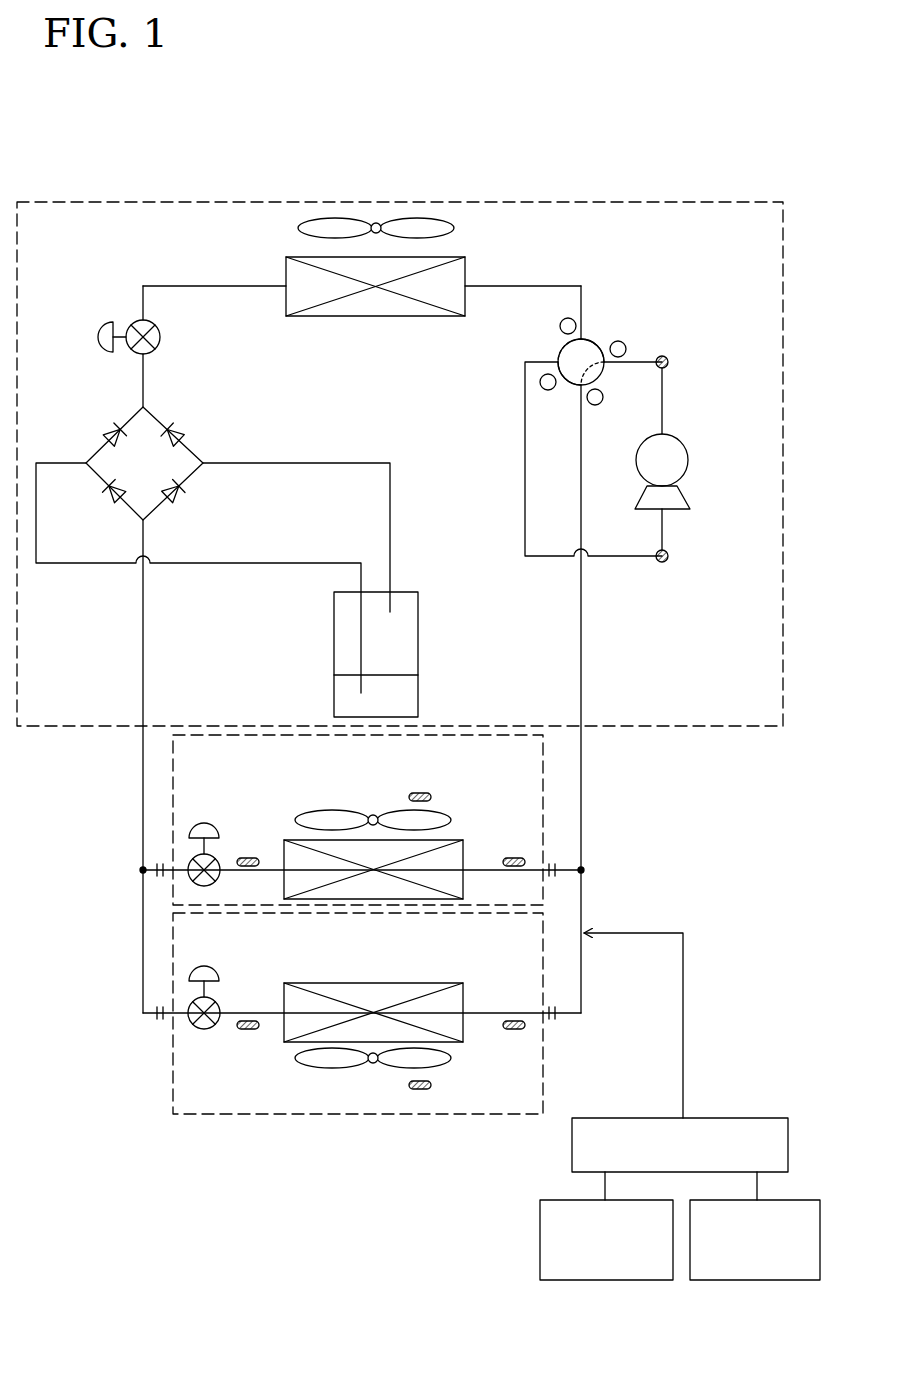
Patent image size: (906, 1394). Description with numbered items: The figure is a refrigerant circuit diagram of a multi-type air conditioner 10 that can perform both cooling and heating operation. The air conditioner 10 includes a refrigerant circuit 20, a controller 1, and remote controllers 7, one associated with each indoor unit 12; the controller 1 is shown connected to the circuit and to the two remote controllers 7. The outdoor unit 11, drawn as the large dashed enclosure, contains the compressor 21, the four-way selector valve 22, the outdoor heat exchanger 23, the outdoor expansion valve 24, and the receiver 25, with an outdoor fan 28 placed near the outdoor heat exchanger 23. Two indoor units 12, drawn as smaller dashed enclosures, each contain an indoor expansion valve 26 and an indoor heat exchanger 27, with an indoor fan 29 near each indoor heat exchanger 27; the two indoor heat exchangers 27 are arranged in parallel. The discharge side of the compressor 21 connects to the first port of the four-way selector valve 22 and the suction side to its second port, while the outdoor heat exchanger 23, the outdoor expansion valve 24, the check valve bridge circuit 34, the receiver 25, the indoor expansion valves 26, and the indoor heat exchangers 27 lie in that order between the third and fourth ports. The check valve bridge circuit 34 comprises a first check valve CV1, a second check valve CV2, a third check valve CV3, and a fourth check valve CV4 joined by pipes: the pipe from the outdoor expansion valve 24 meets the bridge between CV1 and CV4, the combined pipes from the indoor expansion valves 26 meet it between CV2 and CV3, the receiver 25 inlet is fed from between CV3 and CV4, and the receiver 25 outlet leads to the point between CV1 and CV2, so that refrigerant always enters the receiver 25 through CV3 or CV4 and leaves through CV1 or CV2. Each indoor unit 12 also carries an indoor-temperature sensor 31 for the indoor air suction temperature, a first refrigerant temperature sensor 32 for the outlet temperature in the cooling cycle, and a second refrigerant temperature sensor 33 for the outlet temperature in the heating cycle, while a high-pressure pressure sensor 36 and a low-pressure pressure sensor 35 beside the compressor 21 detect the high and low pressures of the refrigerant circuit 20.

The controller 1 is at (741, 1118).
The remote controller 7 is at (605, 1282).
The air conditioner 10 is at (142, 146).
The outdoor unit 11 is at (565, 200).
The indoor unit 12 is at (173, 750).
The refrigerant circuit 20 is at (584, 828).
The compressor 21 is at (688, 456).
The four-way selector valve 22 is at (595, 345).
The outdoor heat exchanger 23 is at (467, 262).
The outdoor expansion valve 24 is at (108, 325).
The receiver 25 is at (418, 635).
The indoor expansion valve 26 is at (204, 825).
The indoor heat exchanger 27 is at (464, 845).
The outdoor fan 28 is at (298, 227).
The indoor fan 29 is at (334, 812).
The indoor-temperature sensor 31 is at (421, 792).
The first refrigerant temperature sensor 32 is at (514, 856).
The second refrigerant temperature sensor 33 is at (248, 856).
The check valve bridge circuit 34 is at (143, 458).
The low-pressure pressure sensor 35 is at (669, 560).
The high-pressure pressure sensor 36 is at (670, 362).
The first check valve CV1 is at (106, 430).
The second check valve CV2 is at (108, 500).
The third check valve CV3 is at (185, 505).
The fourth check valve CV4 is at (192, 408).